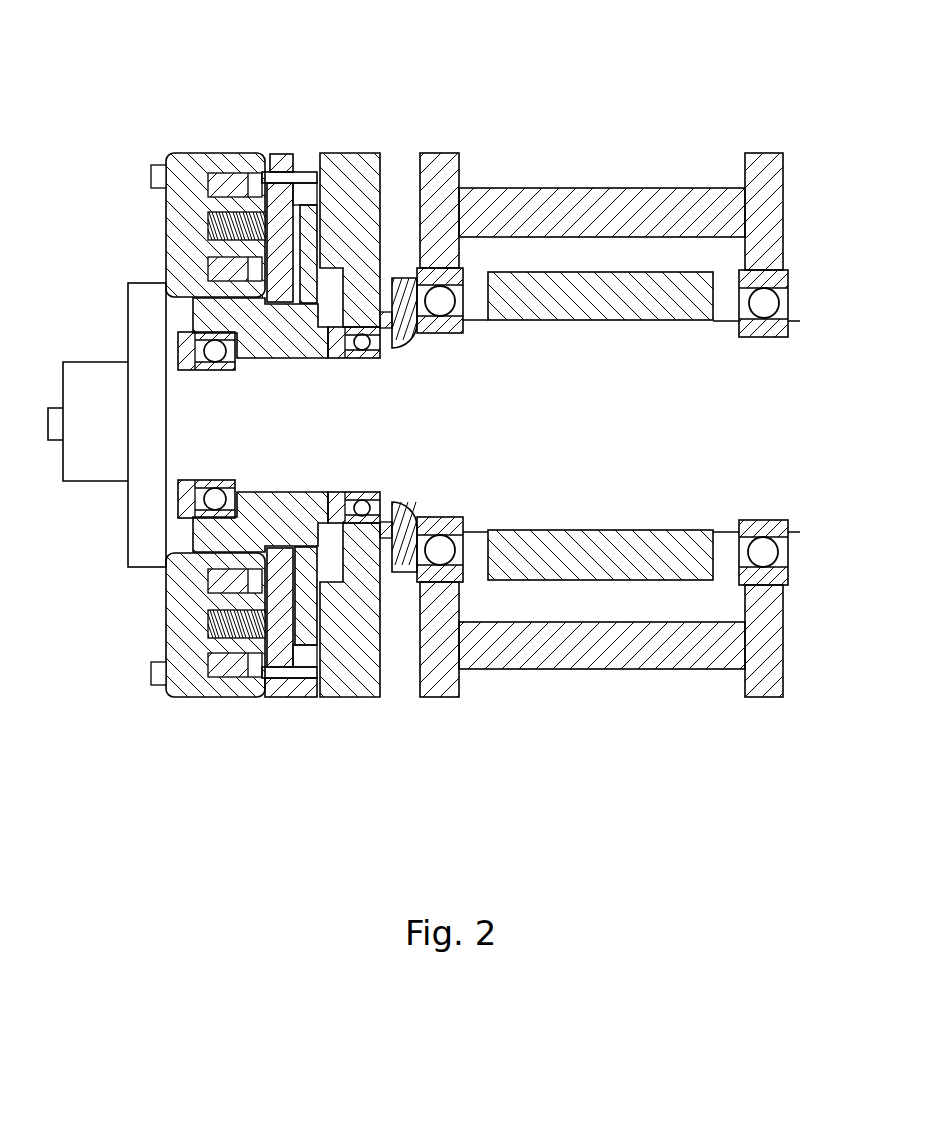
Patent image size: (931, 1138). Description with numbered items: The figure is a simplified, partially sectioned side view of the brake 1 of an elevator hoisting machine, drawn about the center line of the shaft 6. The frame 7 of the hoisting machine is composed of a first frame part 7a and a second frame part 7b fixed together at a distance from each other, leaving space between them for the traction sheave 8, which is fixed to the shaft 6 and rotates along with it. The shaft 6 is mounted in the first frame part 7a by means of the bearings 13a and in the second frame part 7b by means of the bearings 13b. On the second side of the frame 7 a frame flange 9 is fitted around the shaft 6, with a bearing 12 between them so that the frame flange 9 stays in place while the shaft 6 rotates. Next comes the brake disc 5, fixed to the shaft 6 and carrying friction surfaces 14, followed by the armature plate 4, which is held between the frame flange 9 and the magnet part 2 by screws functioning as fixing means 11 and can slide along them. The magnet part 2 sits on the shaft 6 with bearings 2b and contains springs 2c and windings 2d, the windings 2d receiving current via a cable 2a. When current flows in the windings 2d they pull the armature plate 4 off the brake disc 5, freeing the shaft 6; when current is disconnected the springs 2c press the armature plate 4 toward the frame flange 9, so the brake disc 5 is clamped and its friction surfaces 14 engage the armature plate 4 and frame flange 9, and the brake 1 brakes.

The brake 1 is at (213, 82).
The magnet part 2 is at (172, 222).
The cable 2a is at (58, 405).
The bearings 2b is at (210, 495).
The springs 2c is at (208, 628).
The windings 2d is at (222, 678).
The armature plate 4 is at (283, 153).
The brake disc 5 is at (282, 505).
The shaft 6 is at (616, 442).
The frame 7 is at (604, 125).
The first frame part 7a is at (752, 153).
The second frame part 7b is at (450, 153).
The traction sheave 8 is at (580, 580).
The frame flange 9 is at (345, 153).
The fixing means 11 is at (310, 697).
The bearing 12 is at (365, 360).
The bearings 13a is at (782, 303).
The bearings 13b is at (456, 302).
The friction surfaces 14 is at (317, 602).